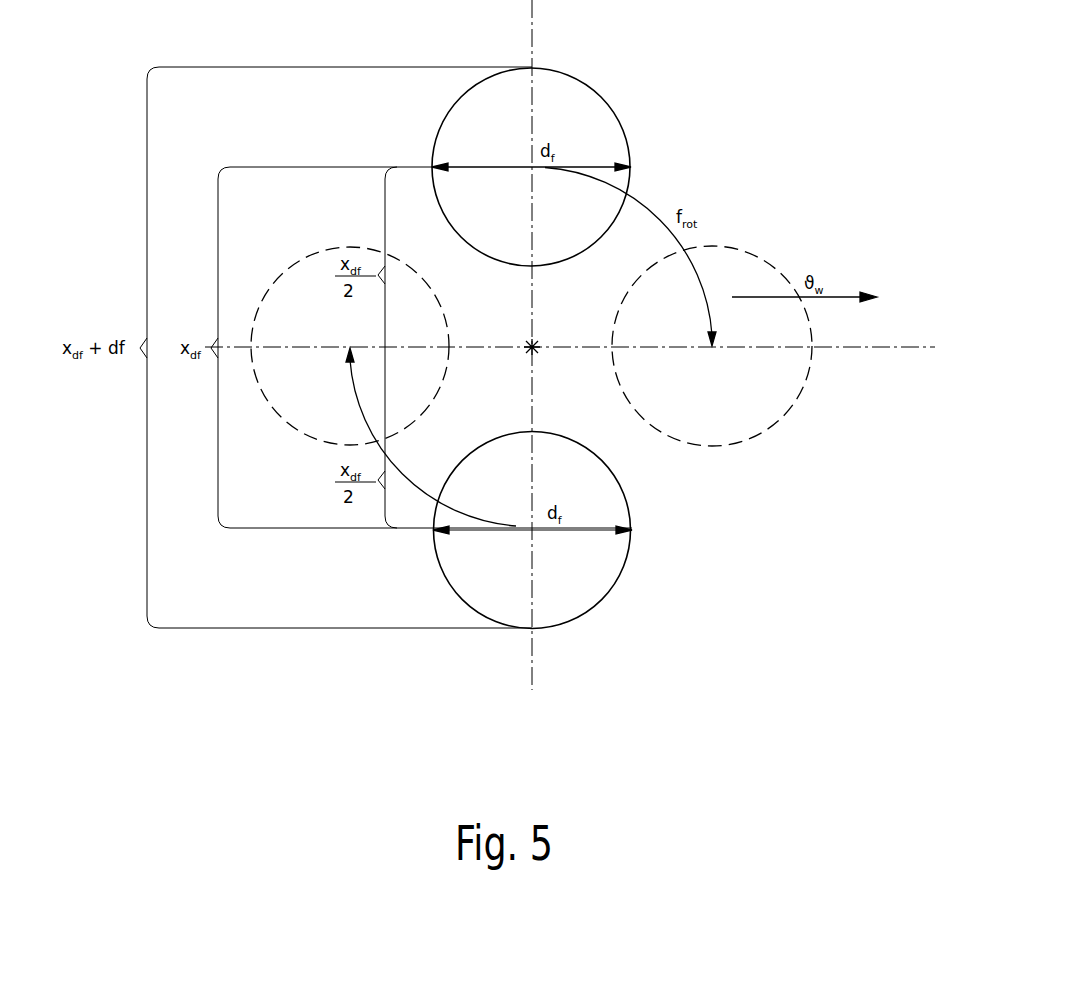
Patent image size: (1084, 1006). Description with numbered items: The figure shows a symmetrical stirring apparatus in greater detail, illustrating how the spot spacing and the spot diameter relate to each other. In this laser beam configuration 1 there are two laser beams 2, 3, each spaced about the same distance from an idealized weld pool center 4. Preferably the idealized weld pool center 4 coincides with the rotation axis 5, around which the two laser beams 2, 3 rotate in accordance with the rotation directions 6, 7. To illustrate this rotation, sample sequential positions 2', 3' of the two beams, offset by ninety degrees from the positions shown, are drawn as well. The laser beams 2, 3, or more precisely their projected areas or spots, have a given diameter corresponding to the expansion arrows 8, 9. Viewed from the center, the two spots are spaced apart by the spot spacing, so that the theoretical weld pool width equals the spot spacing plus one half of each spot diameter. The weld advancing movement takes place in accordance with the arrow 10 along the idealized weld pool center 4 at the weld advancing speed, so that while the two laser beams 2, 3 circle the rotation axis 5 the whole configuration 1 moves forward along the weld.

The laser beam configuration 1 is at (812, 165).
The laser beam 2 is at (531, 133).
The sequential position of laser beam 2' is at (729, 360).
The laser beam 3 is at (537, 549).
The sequential position of laser beam 3' is at (338, 364).
The idealized weld pool center 4 is at (922, 345).
The rotation axis 5 is at (540, 353).
The rotation direction 6 is at (652, 209).
The rotation direction 7 is at (412, 500).
The expansion arrow 8 is at (474, 163).
The expansion arrow 9 is at (470, 545).
The weld advancing movement arrow 10 is at (842, 295).